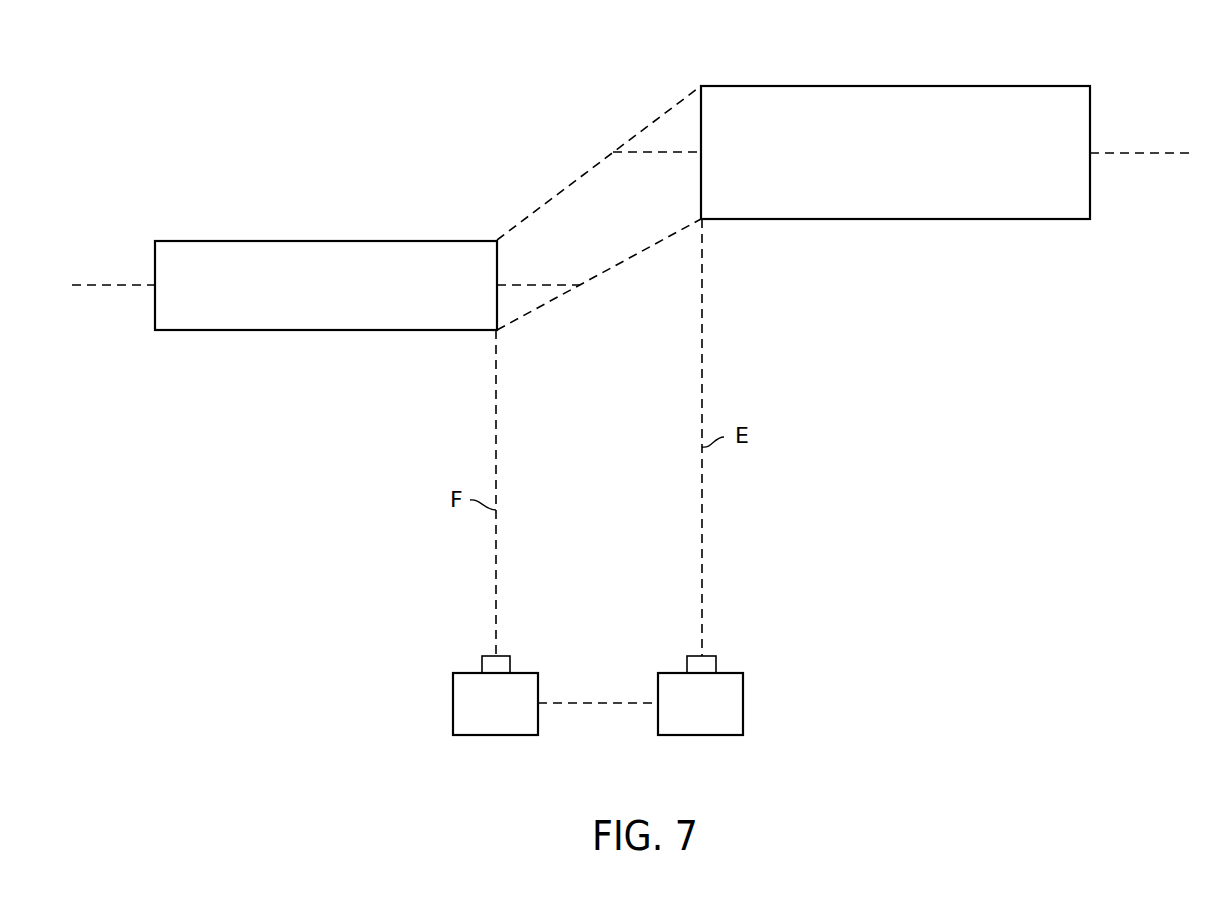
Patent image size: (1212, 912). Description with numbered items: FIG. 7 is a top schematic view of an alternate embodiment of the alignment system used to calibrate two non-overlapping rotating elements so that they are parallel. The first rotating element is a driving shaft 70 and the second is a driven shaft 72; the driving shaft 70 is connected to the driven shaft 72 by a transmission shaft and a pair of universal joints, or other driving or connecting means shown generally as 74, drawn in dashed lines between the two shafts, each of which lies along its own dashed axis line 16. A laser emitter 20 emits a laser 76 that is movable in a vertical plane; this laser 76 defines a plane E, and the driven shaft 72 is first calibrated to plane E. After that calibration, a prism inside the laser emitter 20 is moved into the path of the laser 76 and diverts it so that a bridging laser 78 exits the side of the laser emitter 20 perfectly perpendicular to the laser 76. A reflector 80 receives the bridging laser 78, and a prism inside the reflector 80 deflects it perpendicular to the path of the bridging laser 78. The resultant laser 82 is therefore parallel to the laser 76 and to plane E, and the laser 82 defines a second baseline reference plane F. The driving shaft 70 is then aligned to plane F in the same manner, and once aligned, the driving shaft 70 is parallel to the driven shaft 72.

The shaft 16 is at (93, 285).
The laser emitter 20 is at (721, 717).
The driving shaft 70 is at (333, 293).
The driven shaft 72 is at (906, 159).
The driving or connecting means 74 is at (587, 122).
The laser 76 is at (702, 543).
The bridging laser 78 is at (590, 705).
The reflector 80 is at (511, 717).
The resultant laser 82 is at (496, 560).